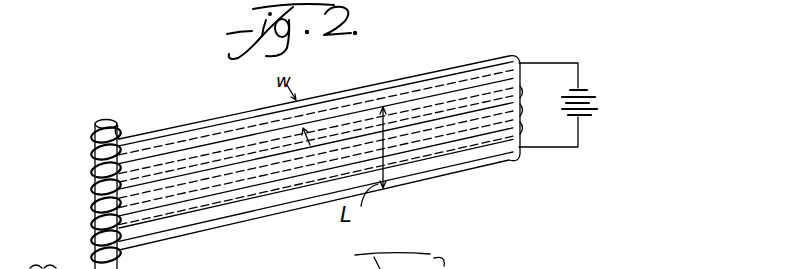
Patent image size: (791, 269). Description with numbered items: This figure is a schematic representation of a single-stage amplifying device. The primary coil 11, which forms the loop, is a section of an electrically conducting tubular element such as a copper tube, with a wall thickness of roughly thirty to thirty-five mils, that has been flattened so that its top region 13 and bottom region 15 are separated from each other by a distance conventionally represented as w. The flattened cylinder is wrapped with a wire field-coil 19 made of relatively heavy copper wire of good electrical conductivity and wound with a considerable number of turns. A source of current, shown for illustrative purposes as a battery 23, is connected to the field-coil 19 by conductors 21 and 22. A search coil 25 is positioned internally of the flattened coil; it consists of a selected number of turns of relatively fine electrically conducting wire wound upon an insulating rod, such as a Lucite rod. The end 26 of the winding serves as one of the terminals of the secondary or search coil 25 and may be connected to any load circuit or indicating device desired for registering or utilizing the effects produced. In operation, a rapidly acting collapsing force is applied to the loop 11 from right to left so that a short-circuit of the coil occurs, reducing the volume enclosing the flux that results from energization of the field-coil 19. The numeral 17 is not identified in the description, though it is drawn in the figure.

The primary coil 11 is at (321, 150).
The top region 13 is at (403, 185).
The bottom region 15 is at (357, 96).
The coil winding 17 is at (91, 195).
The wire field-coil 19 is at (440, 176).
The conductor 21 is at (540, 63).
The conductor 22 is at (552, 148).
The battery 23 is at (584, 116).
The search coil 25 is at (108, 118).
The end of winding 26 is at (122, 134).